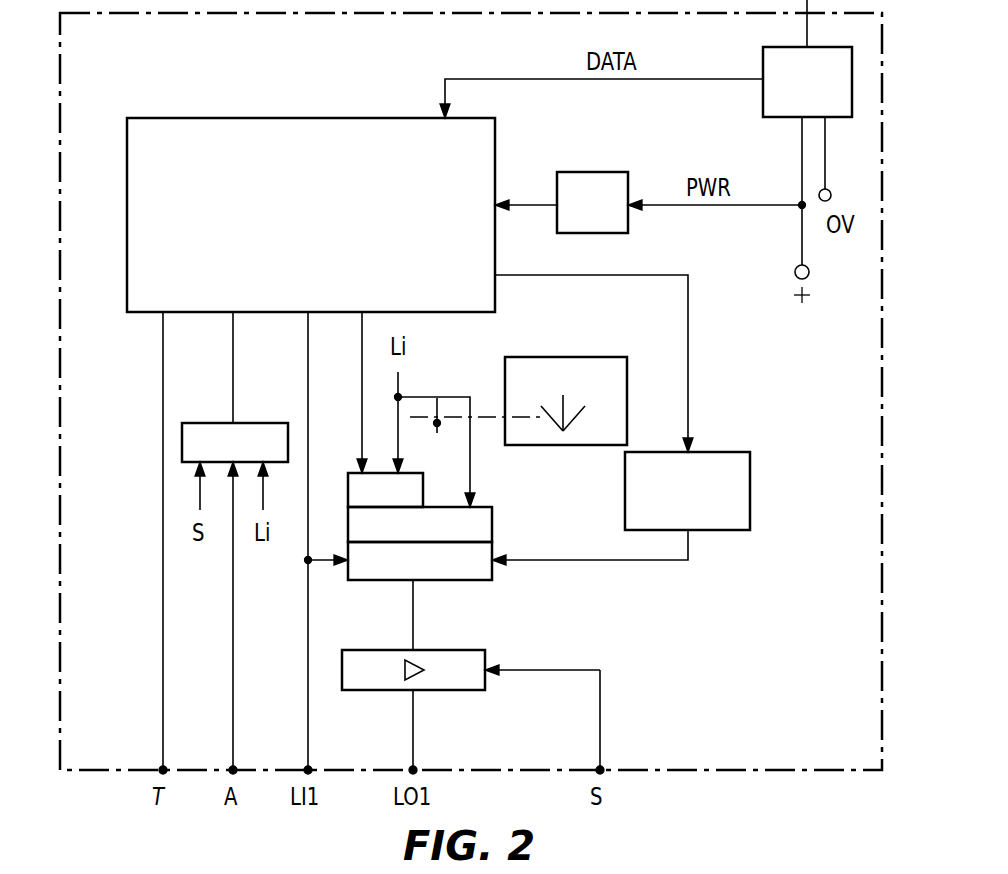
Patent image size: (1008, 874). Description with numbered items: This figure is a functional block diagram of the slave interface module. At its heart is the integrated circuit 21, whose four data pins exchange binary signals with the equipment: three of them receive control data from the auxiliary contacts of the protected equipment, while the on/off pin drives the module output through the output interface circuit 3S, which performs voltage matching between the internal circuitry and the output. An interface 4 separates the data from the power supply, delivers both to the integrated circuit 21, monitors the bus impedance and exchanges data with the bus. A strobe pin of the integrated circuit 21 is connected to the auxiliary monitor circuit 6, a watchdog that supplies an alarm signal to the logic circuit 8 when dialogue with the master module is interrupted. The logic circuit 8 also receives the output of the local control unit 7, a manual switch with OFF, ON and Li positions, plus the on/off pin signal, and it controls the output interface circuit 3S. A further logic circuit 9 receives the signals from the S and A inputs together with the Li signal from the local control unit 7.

The integrated circuit 21 is at (210, 118).
The interface 4 is at (763, 102).
The auxiliary monitor circuit 6 is at (750, 500).
The local control unit 7 is at (578, 357).
The logic circuit 8 is at (492, 547).
The logic circuit 9 is at (182, 447).
The output interface circuit 3S is at (488, 660).